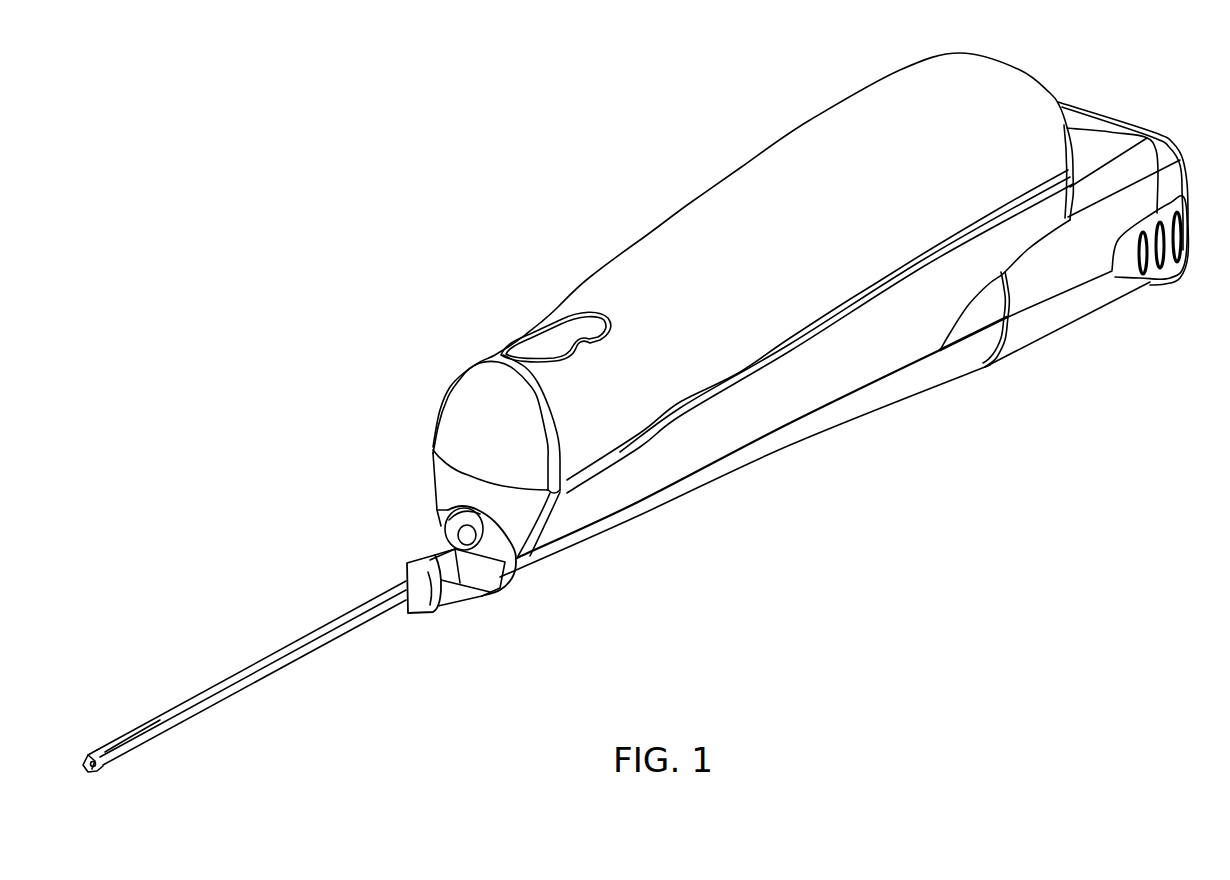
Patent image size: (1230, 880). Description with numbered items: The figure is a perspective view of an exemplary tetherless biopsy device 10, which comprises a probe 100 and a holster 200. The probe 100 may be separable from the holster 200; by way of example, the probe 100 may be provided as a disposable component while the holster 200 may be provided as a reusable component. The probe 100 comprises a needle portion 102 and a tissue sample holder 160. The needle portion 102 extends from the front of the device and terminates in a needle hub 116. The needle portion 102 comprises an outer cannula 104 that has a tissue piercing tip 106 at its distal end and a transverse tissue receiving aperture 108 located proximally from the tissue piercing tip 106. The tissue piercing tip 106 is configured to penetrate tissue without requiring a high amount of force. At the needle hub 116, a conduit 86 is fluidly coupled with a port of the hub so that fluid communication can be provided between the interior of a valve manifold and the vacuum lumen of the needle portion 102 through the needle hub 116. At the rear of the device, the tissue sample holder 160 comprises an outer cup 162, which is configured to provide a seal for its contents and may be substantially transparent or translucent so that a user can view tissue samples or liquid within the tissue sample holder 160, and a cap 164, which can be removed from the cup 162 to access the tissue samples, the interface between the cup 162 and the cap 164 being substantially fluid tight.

The biopsy device 10 is at (473, 109).
The holster 200 is at (728, 197).
The probe 100 is at (618, 562).
The tissue sample holder 160 is at (1077, 364).
The outer cup 162 is at (1090, 315).
The cap 164 is at (1113, 125).
The conduit 86 is at (465, 533).
The needle hub 116 is at (437, 603).
The needle portion 102 is at (315, 669).
The outer cannula 104 is at (333, 628).
The tissue piercing tip 106 is at (83, 763).
The transverse tissue receiving aperture 108 is at (141, 716).